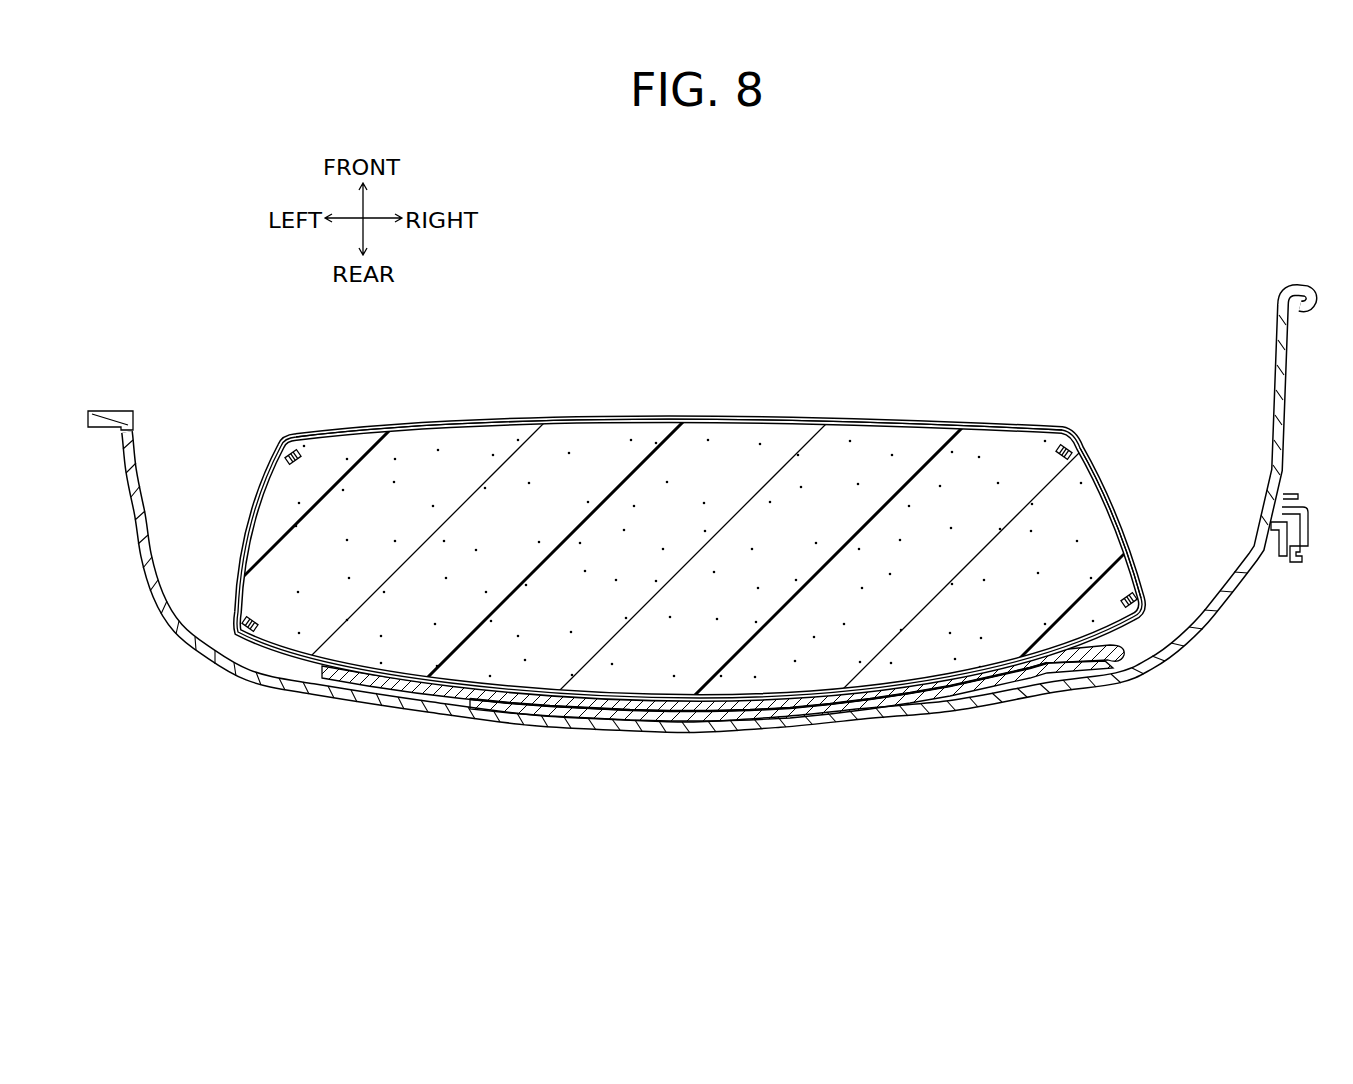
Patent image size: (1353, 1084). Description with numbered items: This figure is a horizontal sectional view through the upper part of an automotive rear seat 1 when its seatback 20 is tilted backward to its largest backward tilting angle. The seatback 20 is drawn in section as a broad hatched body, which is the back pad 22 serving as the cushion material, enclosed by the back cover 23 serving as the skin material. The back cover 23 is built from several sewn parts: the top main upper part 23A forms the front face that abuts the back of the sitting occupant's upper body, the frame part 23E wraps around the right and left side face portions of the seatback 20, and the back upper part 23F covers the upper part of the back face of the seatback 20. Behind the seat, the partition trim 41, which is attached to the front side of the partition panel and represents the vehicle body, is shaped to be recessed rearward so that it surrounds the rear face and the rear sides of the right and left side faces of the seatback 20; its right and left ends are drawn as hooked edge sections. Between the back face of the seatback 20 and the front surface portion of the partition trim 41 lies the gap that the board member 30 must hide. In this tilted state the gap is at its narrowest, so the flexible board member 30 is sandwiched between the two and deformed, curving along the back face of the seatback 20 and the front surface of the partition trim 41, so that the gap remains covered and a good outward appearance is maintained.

The automotive rear seat 1 is at (979, 327).
The seatback 20 is at (639, 412).
The back pad 22 is at (868, 457).
The back cover 23 is at (248, 532).
The top main upper part 23A is at (750, 417).
The frame part 23E is at (1118, 500).
The back upper part 23F is at (1062, 656).
The board member 30 is at (708, 708).
The partition trim 41 is at (598, 728).